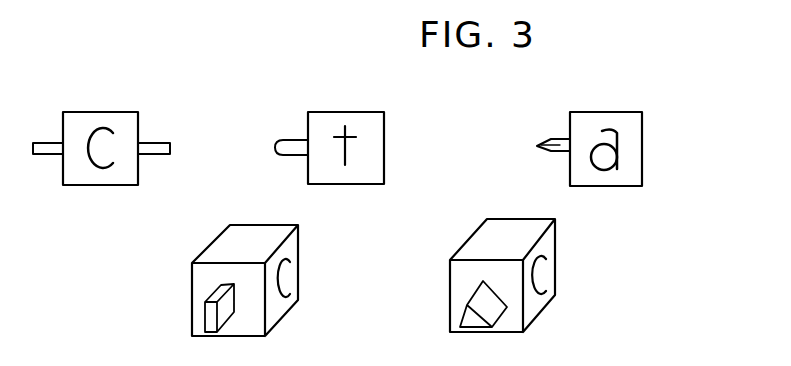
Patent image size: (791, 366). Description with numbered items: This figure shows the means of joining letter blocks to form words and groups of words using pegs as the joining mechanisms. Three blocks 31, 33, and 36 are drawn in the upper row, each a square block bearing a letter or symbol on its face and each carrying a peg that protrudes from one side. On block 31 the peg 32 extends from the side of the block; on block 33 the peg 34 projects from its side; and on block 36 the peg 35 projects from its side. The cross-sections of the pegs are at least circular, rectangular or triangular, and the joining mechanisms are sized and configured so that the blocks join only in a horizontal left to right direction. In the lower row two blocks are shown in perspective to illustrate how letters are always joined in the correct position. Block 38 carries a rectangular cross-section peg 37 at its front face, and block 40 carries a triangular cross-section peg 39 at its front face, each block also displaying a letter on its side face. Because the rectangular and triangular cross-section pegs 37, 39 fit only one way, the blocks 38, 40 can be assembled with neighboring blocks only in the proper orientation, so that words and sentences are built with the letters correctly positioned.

The block 31 is at (80, 111).
The peg 32 is at (151, 140).
The block 33 is at (352, 110).
The rounded peg 34 is at (286, 140).
The pointed peg 35 is at (553, 133).
The block 36 is at (622, 108).
The rectangular peg 37 is at (210, 292).
The block 38 is at (215, 240).
The diamond shaped peg 39 is at (470, 290).
The block 40 is at (470, 233).